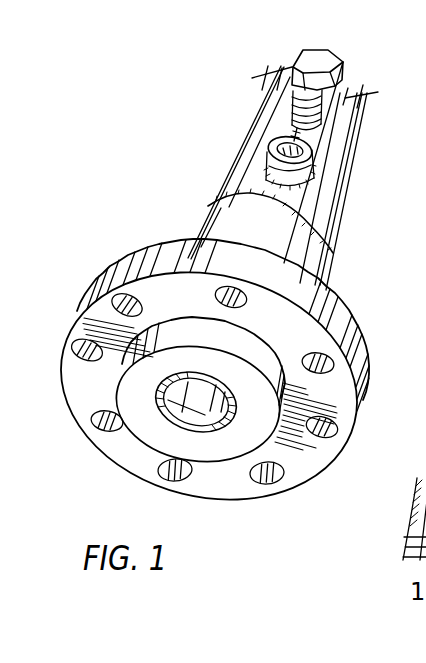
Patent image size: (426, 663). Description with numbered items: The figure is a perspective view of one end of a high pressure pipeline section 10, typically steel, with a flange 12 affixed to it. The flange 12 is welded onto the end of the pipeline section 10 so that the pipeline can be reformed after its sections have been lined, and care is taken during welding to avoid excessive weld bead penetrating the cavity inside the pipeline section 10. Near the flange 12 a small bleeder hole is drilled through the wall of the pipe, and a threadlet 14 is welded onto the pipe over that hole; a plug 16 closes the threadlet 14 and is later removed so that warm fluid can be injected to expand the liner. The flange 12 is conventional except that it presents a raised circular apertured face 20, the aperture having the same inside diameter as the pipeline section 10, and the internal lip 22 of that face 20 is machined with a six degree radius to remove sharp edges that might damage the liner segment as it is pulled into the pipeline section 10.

The pipeline section 10 is at (343, 148).
The flange 12 is at (338, 398).
The threadlet 14 is at (320, 152).
The plug 16 is at (340, 62).
The raised circular apertured face 20 is at (240, 445).
The internal lip 22 is at (213, 432).